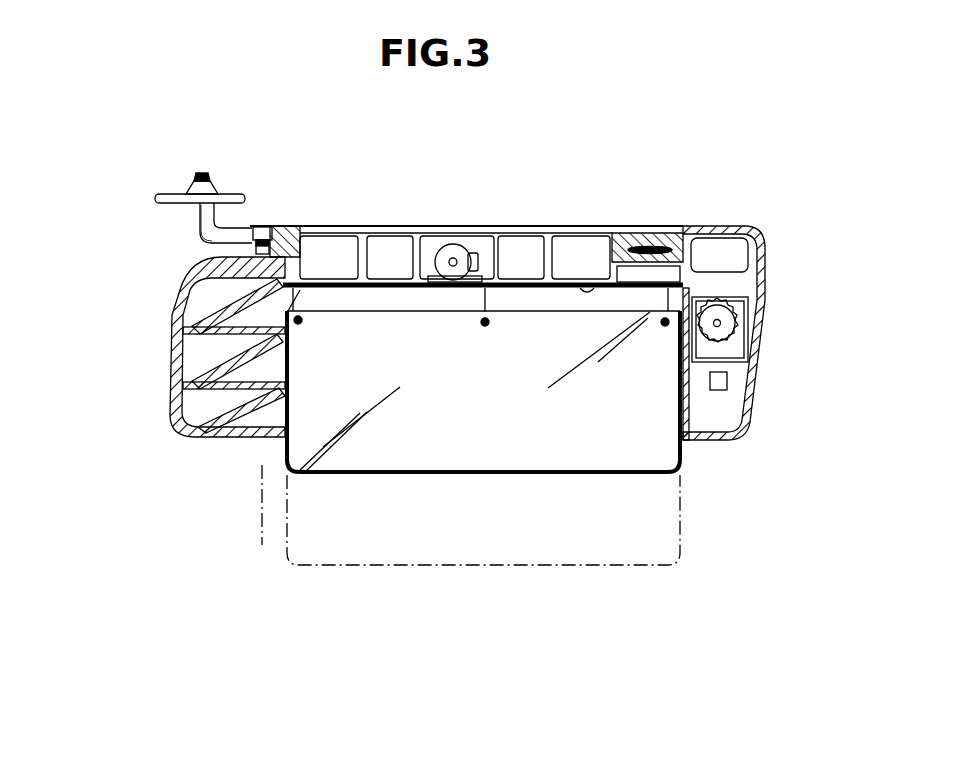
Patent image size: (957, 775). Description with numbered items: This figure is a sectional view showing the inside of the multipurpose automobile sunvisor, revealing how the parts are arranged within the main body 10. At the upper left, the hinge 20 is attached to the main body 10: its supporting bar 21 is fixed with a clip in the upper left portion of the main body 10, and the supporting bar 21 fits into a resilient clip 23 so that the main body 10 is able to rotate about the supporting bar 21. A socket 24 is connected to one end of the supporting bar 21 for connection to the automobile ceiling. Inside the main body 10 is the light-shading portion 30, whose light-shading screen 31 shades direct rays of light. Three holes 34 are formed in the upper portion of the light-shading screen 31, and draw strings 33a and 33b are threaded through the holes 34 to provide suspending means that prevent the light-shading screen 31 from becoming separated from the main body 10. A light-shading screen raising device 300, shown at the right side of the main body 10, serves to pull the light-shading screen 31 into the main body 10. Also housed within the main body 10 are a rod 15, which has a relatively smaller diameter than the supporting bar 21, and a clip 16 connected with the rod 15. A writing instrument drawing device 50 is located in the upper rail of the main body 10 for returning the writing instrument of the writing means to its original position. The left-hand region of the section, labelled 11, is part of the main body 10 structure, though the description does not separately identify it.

The main body 10 is at (188, 460).
The frame wall 11 is at (172, 355).
The rod 15 is at (700, 232).
The clip 16 is at (652, 240).
The hinge 20 is at (185, 246).
The supporting bar 21 is at (193, 226).
The resilient clip 23 is at (259, 228).
The socket 24 is at (183, 195).
The light-shading portion 30 is at (622, 515).
The light-shading screen 31 is at (462, 432).
The draw string 33a is at (490, 290).
The draw string 33b is at (330, 280).
The holes 34 is at (298, 322).
The writing instrument drawing device 50 is at (452, 228).
The light-shading screen raising device 300 is at (760, 320).